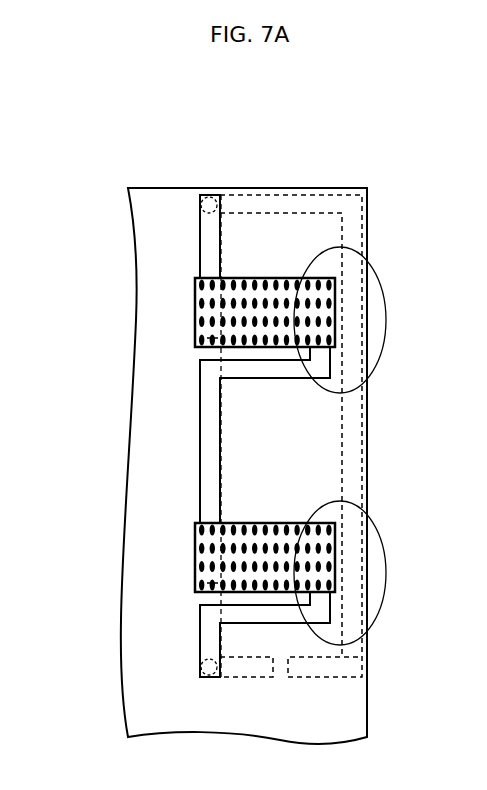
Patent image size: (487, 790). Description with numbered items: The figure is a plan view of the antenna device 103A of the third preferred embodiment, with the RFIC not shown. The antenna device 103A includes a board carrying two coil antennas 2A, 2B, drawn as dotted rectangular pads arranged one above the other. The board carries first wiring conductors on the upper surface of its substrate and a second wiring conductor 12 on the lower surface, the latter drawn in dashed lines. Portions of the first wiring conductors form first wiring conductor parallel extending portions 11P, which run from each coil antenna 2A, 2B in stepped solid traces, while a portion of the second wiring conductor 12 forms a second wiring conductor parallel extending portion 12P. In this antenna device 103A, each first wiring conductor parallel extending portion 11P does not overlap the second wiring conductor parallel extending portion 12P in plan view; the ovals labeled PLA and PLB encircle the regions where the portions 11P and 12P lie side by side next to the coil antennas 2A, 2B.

The antenna device 103A is at (353, 161).
The coil antenna 2A is at (196, 312).
The coil antenna 2B is at (196, 558).
The first wiring conductor parallel extending portion 11P is at (322, 365).
The second wiring conductor parallel extending portion 12P is at (352, 318).
The second wiring conductor 12 is at (352, 440).
The first placement region PLA is at (383, 280).
The second placement region PLB is at (383, 527).